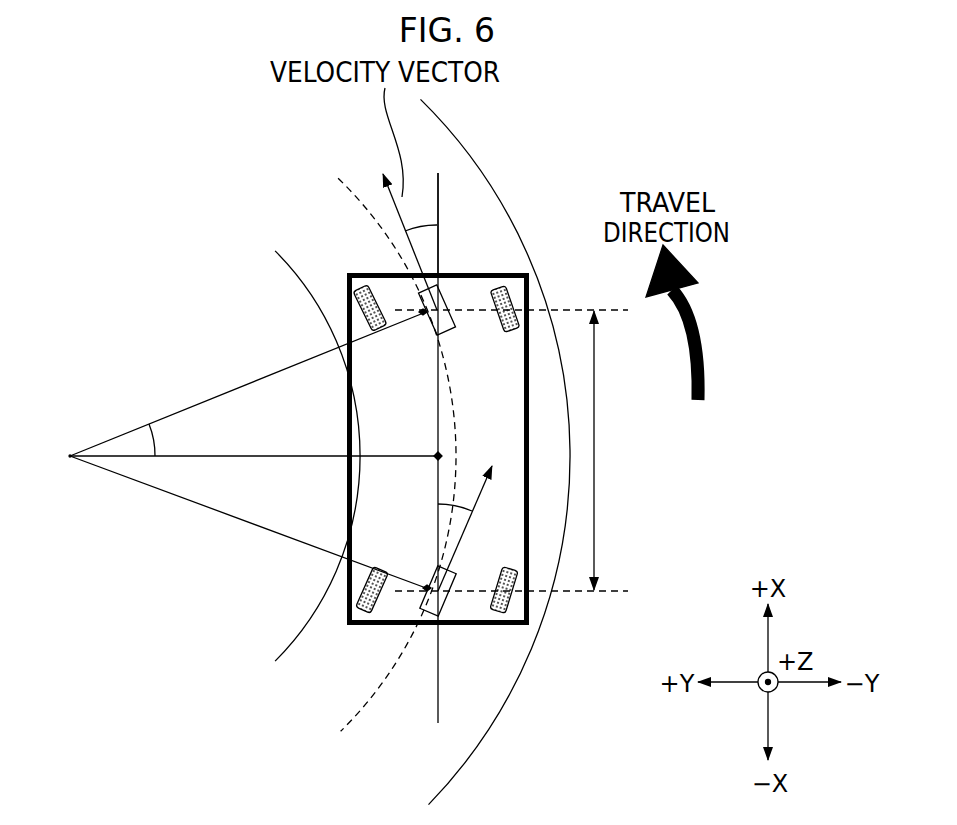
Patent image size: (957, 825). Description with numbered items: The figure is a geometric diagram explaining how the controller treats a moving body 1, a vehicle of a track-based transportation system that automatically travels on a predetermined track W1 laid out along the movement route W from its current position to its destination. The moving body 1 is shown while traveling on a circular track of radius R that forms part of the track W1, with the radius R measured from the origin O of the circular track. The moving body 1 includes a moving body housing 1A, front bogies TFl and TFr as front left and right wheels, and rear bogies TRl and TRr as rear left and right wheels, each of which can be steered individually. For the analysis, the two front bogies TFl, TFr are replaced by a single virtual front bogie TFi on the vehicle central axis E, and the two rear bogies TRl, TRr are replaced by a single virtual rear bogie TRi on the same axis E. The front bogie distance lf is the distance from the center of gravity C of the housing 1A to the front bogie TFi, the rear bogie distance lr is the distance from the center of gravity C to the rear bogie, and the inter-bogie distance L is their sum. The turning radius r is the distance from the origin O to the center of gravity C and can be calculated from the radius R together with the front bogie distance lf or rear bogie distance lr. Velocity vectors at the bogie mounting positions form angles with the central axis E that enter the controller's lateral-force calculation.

The moving body 1 is at (546, 151).
The moving body housing 1A is at (430, 627).
The movement route W is at (491, 734).
The track W1 is at (345, 184).
The front bogie TFl is at (360, 285).
The virtual front bogie TFi is at (448, 297).
The front bogie TFr is at (518, 300).
The rear bogie TRl is at (359, 614).
The virtual rear bogie TRi is at (446, 601).
The rear bogie TRr is at (518, 600).
The vehicle central axis E is at (440, 198).
The origin of the circular track O is at (56, 460).
The radius of the circular track R is at (250, 450).
The turning radius r is at (254, 441).
The center of gravity C is at (441, 456).
The front bogie distance lf is at (420, 391).
The rear bogie distance lr is at (421, 526).
The inter-bogie distance L is at (511, 450).